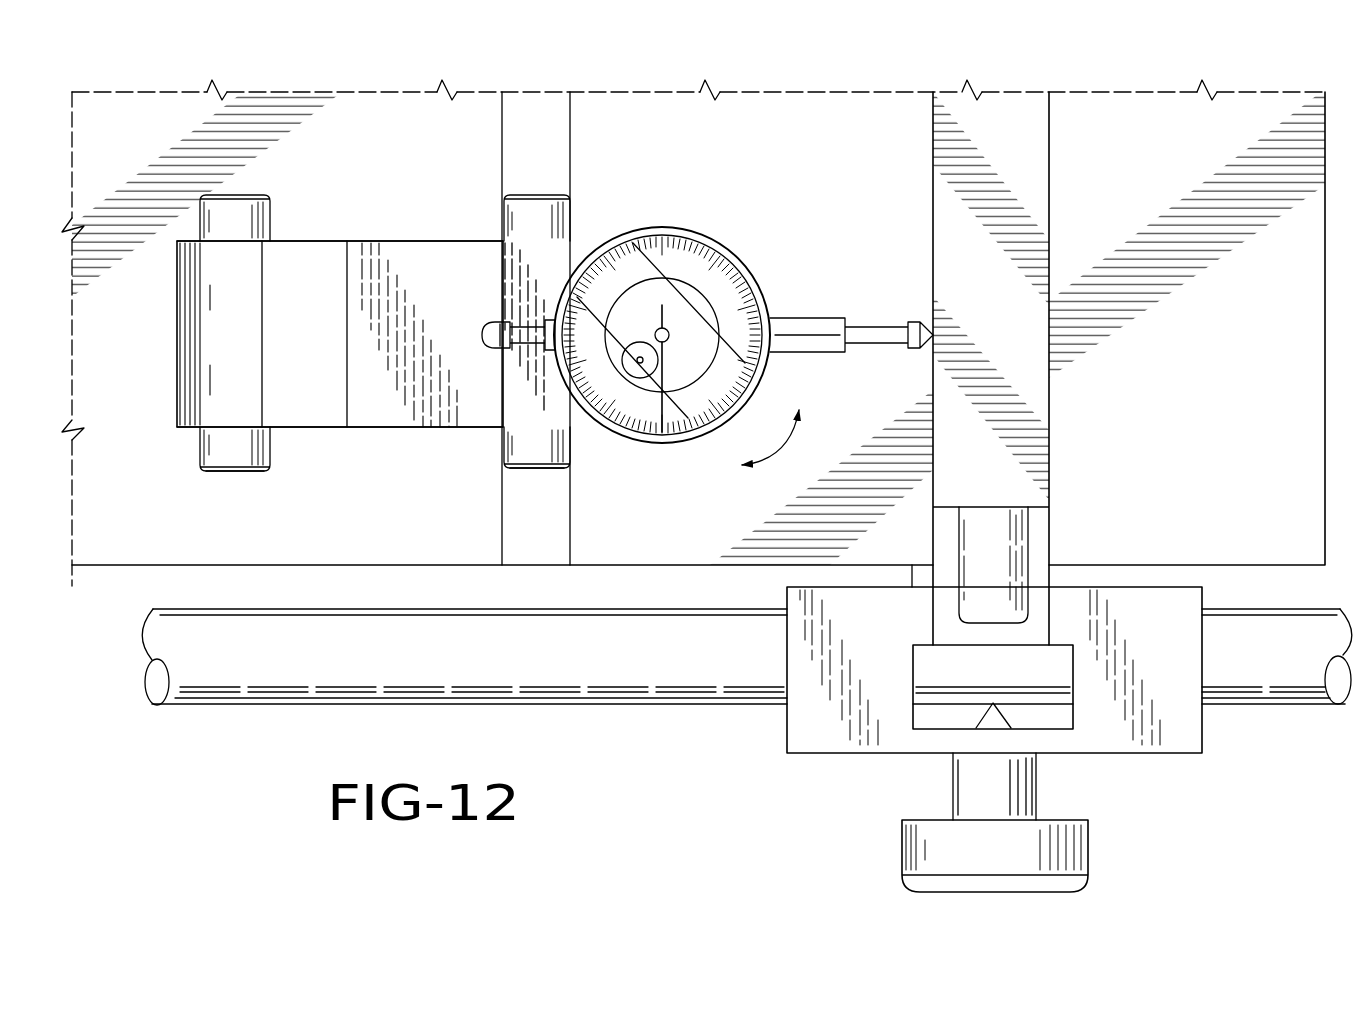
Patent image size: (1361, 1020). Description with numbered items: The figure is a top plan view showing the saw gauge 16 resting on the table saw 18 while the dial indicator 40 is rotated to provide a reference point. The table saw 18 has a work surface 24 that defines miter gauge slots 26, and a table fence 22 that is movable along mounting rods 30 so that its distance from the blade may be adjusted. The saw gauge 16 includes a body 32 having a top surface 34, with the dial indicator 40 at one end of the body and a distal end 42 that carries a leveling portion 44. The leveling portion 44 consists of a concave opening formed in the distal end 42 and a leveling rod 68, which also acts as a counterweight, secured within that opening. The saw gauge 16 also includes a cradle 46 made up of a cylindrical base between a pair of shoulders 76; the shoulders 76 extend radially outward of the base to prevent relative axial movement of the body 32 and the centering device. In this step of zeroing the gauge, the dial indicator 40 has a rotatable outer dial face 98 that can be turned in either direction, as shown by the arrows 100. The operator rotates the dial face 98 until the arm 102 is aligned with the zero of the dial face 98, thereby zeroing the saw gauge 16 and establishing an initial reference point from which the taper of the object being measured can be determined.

The saw gauge 16 is at (307, 351).
The table saw 18 is at (136, 571).
The table fence 22 is at (1030, 155).
The work surface 24 is at (853, 128).
The miter gauge slots 26 is at (500, 133).
The mounting rods 30 is at (212, 680).
The body 32 is at (389, 238).
The top surface 34 is at (399, 405).
The dial indicator 40 is at (707, 301).
The distal end 42 is at (178, 345).
The leveling portion 44 is at (229, 476).
The cradle 46 is at (545, 476).
The leveling rod 68 is at (230, 375).
The shoulders 76 is at (507, 350).
The dial face 98 is at (715, 288).
The arrows 100 is at (783, 447).
The arm 102 is at (660, 312).